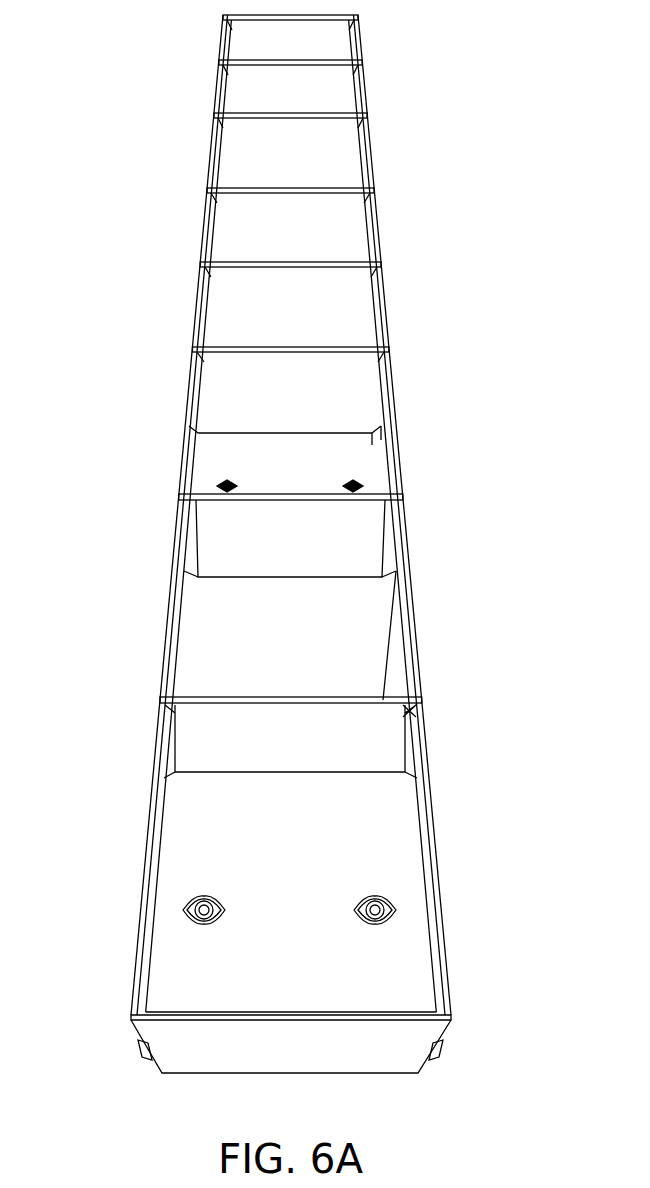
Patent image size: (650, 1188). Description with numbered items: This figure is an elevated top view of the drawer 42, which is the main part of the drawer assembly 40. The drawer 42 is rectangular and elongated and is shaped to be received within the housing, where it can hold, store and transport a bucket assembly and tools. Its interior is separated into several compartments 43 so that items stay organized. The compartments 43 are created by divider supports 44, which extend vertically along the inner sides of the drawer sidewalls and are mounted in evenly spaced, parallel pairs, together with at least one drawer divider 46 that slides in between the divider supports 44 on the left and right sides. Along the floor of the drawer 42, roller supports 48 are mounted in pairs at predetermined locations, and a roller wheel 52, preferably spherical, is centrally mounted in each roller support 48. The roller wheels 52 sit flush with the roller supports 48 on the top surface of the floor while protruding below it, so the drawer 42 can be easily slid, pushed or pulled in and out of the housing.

The drawer assembly 40 is at (282, 544).
The drawer 42 is at (433, 840).
The compartments 43 is at (371, 460).
The divider supports 44 is at (415, 712).
The drawer divider 46 is at (352, 547).
The roller supports 48 is at (184, 912).
The roller wheels 52 is at (392, 916).